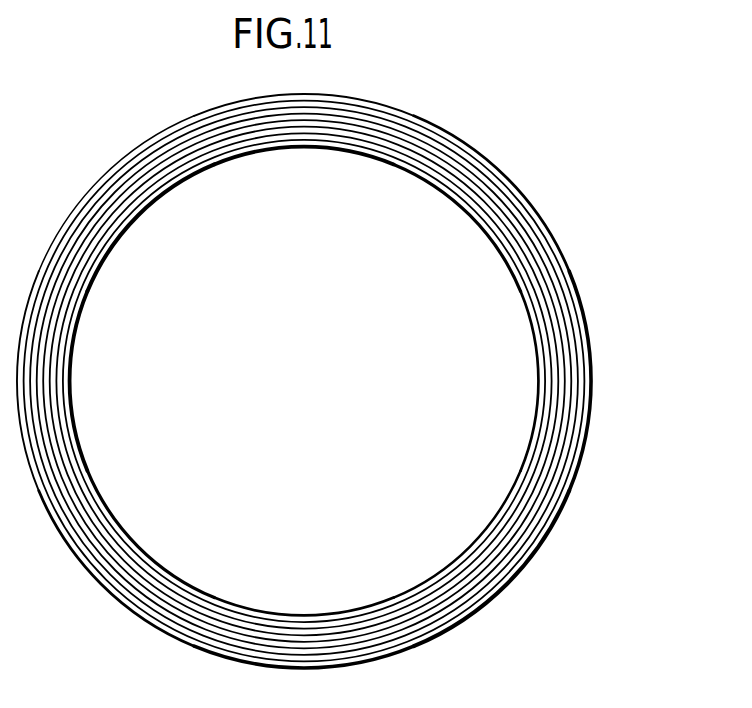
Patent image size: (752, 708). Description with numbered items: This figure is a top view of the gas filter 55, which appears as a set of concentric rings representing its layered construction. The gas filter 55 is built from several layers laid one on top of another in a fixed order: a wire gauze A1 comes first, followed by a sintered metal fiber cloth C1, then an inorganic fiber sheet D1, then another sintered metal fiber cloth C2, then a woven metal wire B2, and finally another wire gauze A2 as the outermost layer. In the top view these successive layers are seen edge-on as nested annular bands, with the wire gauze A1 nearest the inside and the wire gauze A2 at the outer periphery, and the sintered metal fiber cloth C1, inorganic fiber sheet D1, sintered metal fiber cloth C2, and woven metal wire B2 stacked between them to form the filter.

The gas filter 55 is at (533, 200).
The wire gauze A2 is at (556, 236).
The woven metal wire B2 is at (560, 279).
The sintered metal fiber cloth C2 is at (565, 317).
The inorganic fiber sheet D1 is at (569, 356).
The sintered metal fiber cloth C1 is at (560, 396).
The wire gauze A1 is at (540, 446).